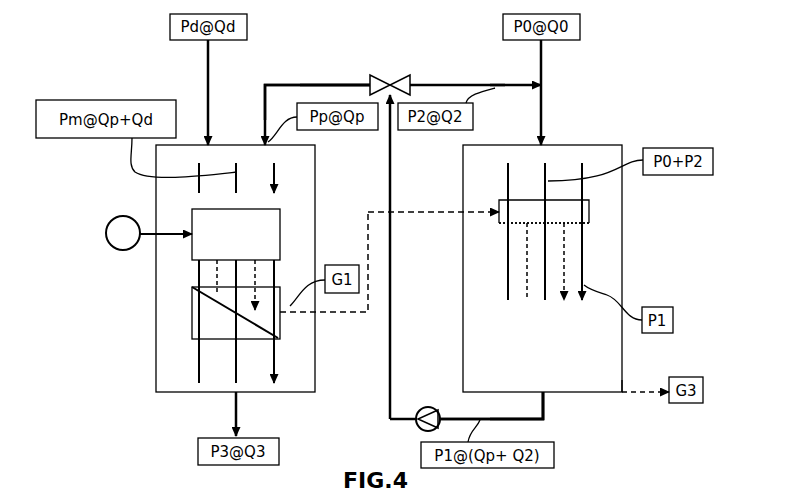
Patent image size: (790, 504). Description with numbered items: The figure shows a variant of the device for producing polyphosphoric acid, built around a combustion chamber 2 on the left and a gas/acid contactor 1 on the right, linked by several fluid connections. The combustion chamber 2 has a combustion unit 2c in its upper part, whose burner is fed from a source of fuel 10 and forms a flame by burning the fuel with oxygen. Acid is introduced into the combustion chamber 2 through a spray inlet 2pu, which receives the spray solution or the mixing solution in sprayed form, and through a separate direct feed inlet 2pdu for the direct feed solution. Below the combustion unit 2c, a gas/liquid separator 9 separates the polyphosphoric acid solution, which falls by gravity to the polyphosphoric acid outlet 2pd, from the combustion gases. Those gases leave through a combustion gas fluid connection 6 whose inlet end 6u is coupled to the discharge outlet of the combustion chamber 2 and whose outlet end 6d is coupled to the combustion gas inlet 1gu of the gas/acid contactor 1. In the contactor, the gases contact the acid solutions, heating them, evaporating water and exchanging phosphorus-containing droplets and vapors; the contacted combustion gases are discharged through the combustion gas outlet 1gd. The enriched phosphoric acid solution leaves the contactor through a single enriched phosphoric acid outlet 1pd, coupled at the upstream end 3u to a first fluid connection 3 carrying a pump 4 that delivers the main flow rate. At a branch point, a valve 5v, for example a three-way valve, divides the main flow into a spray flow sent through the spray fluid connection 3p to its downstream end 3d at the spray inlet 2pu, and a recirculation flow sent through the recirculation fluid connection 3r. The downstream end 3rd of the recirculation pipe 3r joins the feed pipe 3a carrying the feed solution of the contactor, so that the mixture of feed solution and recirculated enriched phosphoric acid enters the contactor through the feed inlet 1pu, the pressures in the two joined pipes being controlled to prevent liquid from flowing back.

The gas/acid contactor 1 is at (463, 345).
The combustion chamber 2 is at (156, 325).
The combustion unit 2c is at (192, 212).
The gas/liquid separator 9 is at (192, 330).
The source of fuel 10 is at (123, 250).
The direct feed inlet 2pdu is at (205, 138).
The polyphosphoric acid outlet 2pd is at (236, 394).
The spray inlet 2pu is at (262, 140).
The downstream end of the spray fluid connection 3d is at (317, 87).
The spray fluid connection 3p is at (308, 85).
The valve 5v is at (387, 80).
The recirculation fluid connection 3r is at (478, 85).
The downstream end of the recirculation fluid connection 3rd is at (530, 83).
The feed pipe 3a is at (545, 72).
The feed inlet 1pu is at (545, 136).
The first fluid connection 3 is at (390, 235).
The pump 4 is at (420, 408).
The enriched phosphoric acid outlet 1pd is at (536, 398).
The upstream end of the first fluid connection 3u is at (516, 406).
The combustion gas fluid connection 6 is at (368, 216).
The inlet of the combustion gas connection 6u is at (282, 315).
The outlet of the combustion gas connection 6d is at (520, 225).
The combustion gas inlet 1gu is at (565, 226).
The combustion gas outlet 1gd is at (622, 379).